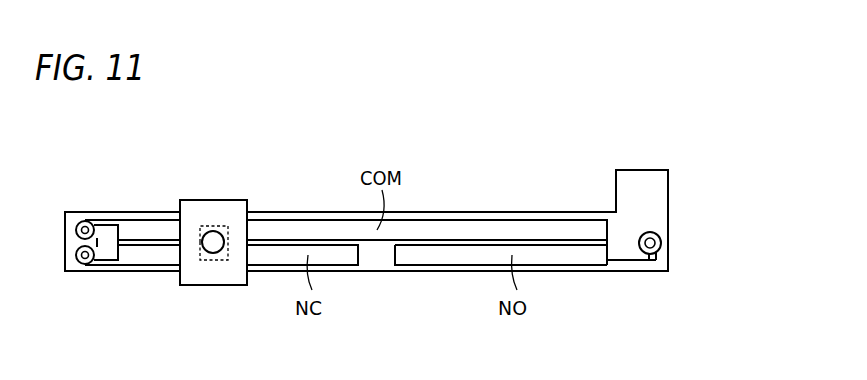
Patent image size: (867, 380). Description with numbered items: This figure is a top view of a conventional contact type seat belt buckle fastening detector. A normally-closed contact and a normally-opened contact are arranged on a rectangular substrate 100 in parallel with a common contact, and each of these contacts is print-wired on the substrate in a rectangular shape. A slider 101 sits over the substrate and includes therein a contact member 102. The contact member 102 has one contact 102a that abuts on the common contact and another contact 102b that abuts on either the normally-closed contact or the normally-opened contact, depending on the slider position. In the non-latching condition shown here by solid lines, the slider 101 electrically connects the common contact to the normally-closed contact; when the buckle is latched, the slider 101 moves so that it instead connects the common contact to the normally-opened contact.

The rectangular substrate 100 is at (625, 230).
The slider 101 is at (211, 193).
The contact member 102 is at (228, 228).
The contact 102a is at (200, 227).
The contact 102b is at (210, 262).